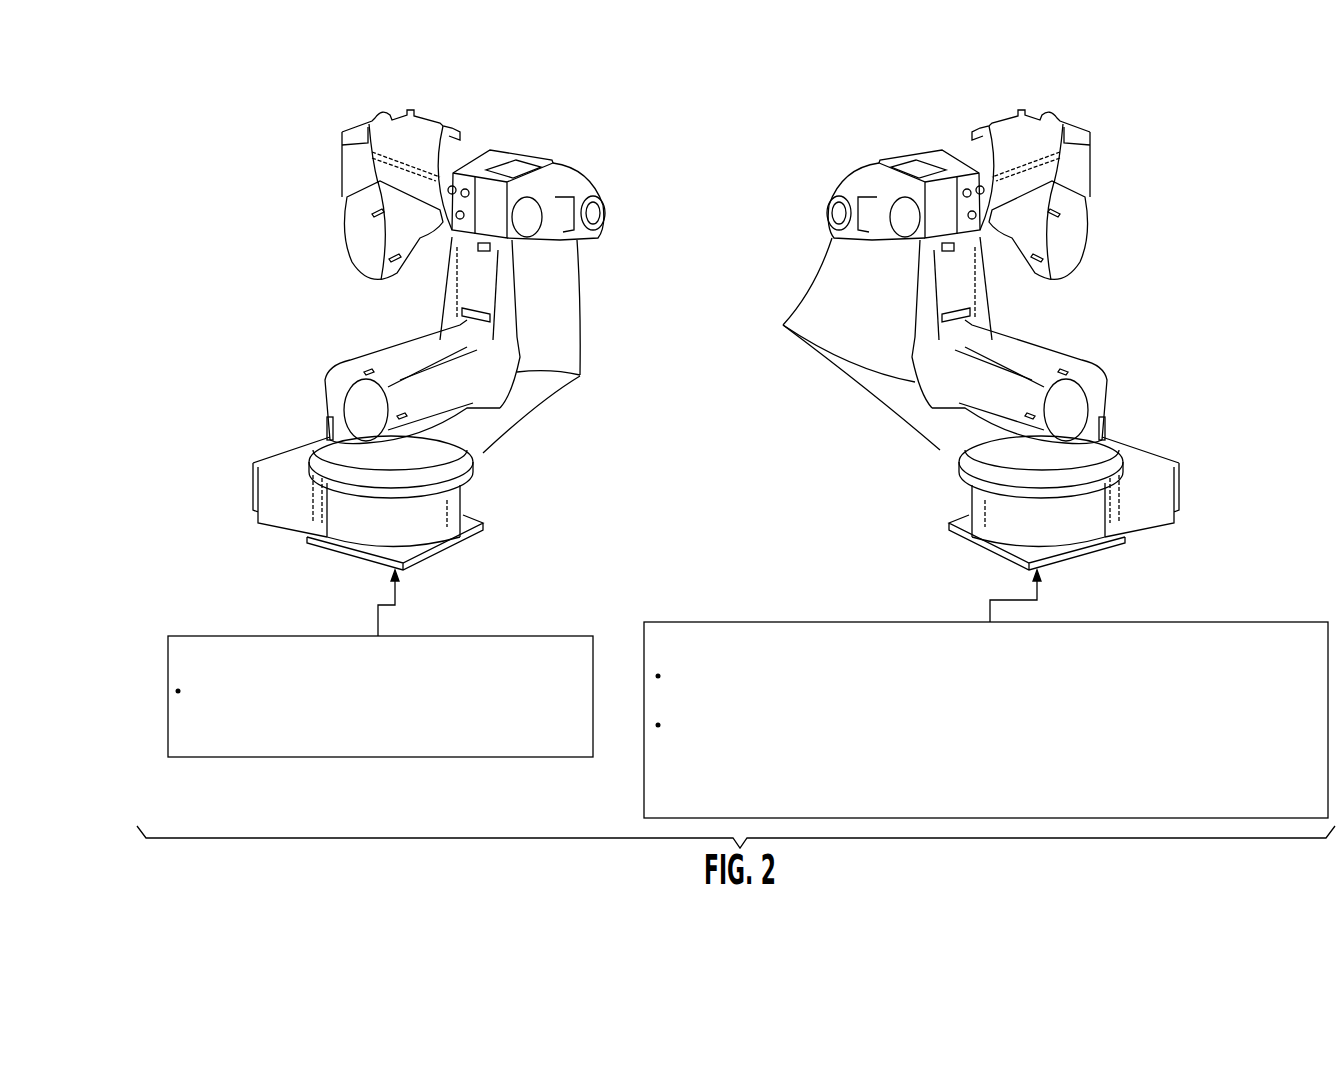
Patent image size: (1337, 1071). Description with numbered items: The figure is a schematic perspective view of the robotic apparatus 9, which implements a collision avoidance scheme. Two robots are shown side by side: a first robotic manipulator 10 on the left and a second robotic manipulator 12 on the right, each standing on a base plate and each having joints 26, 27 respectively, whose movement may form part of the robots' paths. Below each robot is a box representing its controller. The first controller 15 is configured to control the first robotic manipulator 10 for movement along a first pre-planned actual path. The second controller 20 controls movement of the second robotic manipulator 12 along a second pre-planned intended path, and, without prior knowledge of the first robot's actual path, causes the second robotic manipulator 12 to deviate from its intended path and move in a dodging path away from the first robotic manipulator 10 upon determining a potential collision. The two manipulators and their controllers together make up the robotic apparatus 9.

The robotic apparatus 9 is at (226, 152).
The first robotic manipulator 10 is at (277, 426).
The second robotic manipulator 12 is at (854, 134).
The first controller 15 is at (223, 616).
The second controller 20 is at (736, 614).
The joints 26 is at (547, 346).
The joints 27 is at (849, 344).